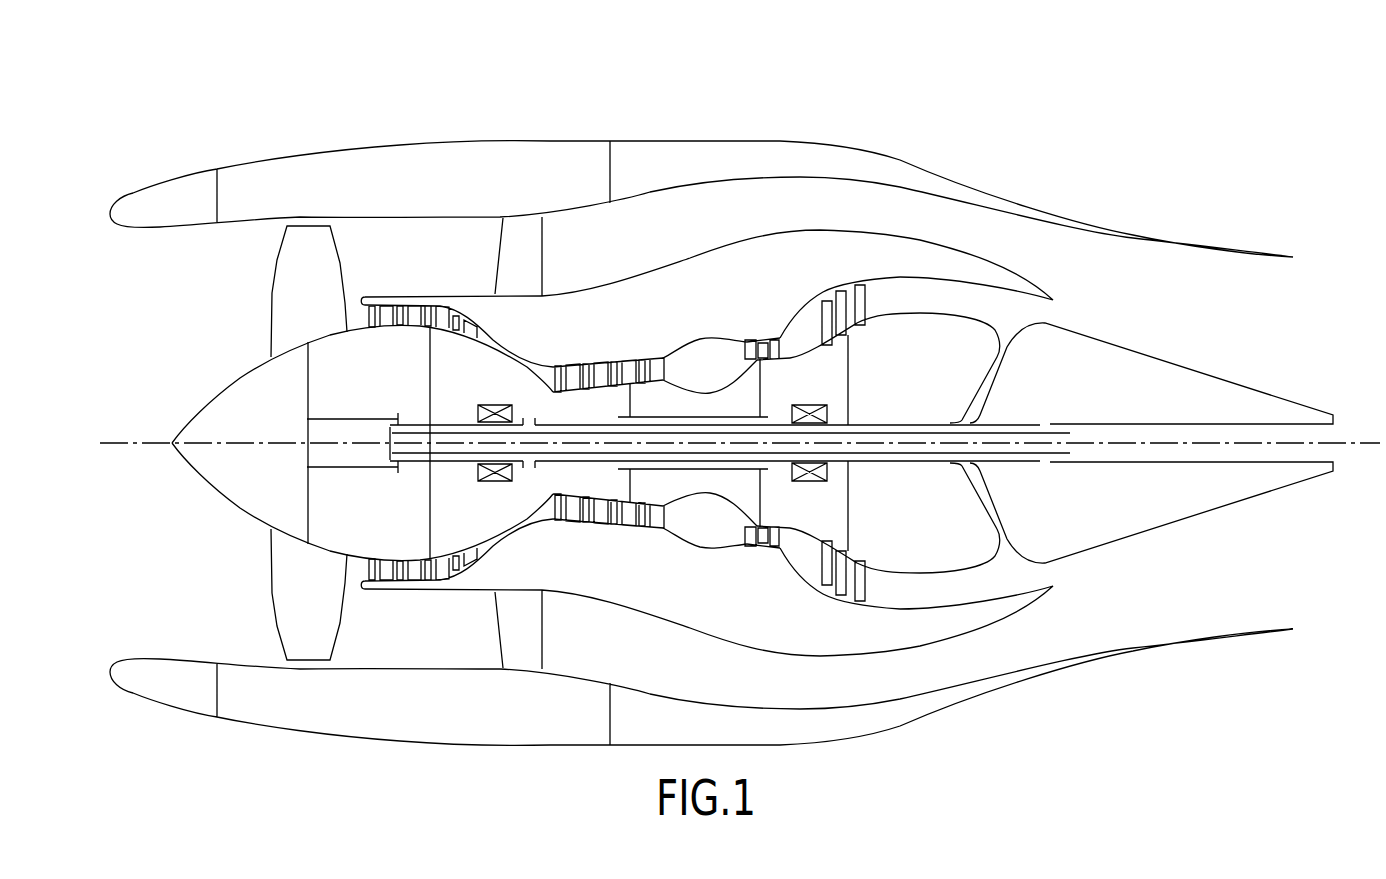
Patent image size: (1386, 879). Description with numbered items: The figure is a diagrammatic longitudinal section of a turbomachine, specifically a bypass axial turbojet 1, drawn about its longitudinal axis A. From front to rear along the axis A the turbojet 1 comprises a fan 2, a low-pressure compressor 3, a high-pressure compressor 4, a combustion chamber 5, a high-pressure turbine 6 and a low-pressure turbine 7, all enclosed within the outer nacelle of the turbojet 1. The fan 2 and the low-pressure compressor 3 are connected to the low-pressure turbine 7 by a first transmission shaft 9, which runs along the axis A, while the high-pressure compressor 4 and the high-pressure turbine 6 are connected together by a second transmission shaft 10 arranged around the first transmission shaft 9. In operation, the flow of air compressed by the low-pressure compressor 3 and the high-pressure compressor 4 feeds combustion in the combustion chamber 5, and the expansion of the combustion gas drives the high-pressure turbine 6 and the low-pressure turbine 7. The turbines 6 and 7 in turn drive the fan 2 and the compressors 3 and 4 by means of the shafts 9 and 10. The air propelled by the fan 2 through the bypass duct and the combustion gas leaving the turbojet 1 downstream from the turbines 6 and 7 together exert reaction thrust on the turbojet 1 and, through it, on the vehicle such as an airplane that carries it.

The bypass axial turbojet 1 is at (917, 92).
The fan 2 is at (254, 282).
The low-pressure compressor 3 is at (404, 284).
The high-pressure compressor 4 is at (654, 341).
The combustion chamber 5 is at (713, 357).
The high-pressure turbine 6 is at (766, 320).
The low-pressure turbine 7 is at (848, 272).
The first transmission shaft 9 is at (888, 447).
The second transmission shaft 10 is at (898, 422).
The longitudinal axis A is at (1358, 442).